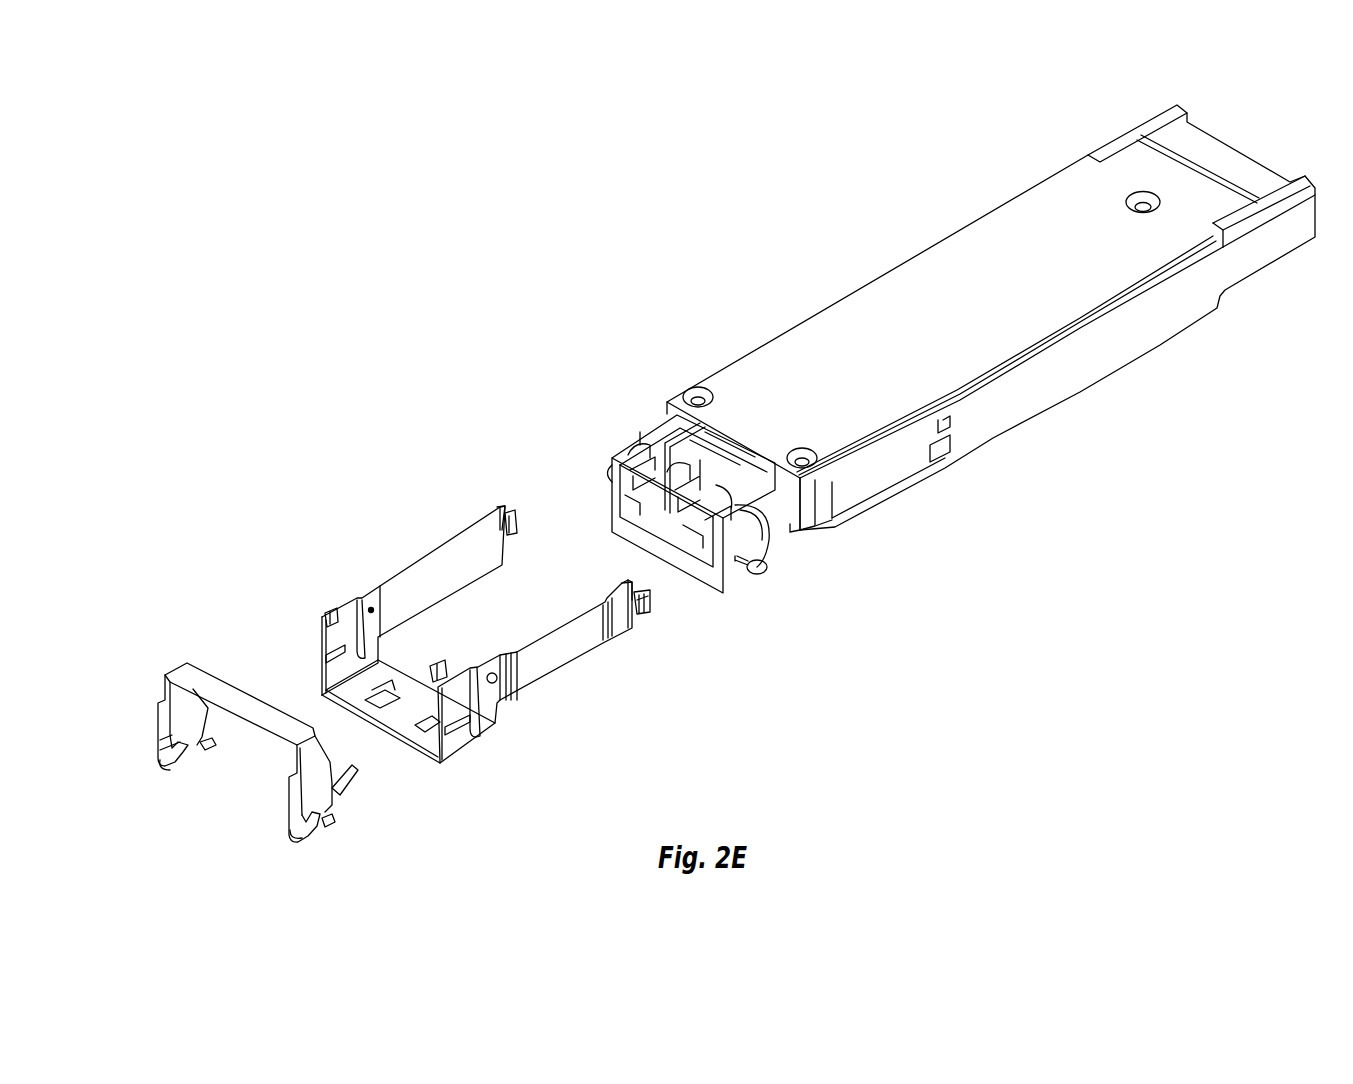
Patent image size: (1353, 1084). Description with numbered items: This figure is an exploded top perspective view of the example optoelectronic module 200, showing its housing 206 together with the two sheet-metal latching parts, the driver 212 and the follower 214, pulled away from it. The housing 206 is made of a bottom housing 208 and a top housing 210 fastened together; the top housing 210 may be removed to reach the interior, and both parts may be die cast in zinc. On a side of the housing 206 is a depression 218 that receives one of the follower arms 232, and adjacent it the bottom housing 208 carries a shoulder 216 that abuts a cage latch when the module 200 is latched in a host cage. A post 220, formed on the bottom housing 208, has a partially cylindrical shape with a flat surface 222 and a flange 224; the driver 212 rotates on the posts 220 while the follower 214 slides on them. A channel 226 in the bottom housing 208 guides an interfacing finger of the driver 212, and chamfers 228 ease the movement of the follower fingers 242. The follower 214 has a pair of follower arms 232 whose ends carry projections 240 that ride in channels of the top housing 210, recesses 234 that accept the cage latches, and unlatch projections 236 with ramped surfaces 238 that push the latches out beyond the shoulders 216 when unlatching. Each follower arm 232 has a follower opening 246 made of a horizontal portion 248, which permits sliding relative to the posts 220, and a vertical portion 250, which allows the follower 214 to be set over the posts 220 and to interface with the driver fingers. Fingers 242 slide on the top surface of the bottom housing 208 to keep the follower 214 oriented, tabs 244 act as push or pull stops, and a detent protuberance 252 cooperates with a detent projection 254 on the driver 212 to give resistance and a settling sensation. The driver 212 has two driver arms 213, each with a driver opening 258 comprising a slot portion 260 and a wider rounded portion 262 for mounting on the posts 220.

The optoelectronic module 200 is at (195, 236).
The housing 206 is at (991, 318).
The bottom housing 208 is at (965, 435).
The top housing 210 is at (1092, 262).
The driver 212 is at (243, 746).
The driver arms 213 is at (198, 730).
The follower 214 is at (481, 631).
The shoulders 216 is at (930, 455).
The depressions 218 is at (888, 462).
The posts 220 is at (608, 473).
The flat surface 222 is at (716, 590).
The flange 224 is at (766, 568).
The channels 226 is at (771, 531).
The chamfers 228 is at (700, 505).
The follower arms 232 is at (575, 660).
The recesses 234 is at (635, 629).
The unlatch projections 236 is at (520, 519).
The ramped surfaces 238 is at (649, 612).
The projections 240 is at (500, 505).
The fingers 242 is at (333, 615).
The tabs 244 is at (420, 725).
The follower openings 246 is at (352, 597).
The horizontal portions 248 is at (328, 660).
The vertical portions 250 is at (372, 616).
The detent protuberances 252 is at (495, 683).
The detent projections 254 is at (356, 773).
The driver opening 258 is at (150, 738).
The slot portion 260 is at (160, 745).
The rounded portion 262 is at (183, 753).